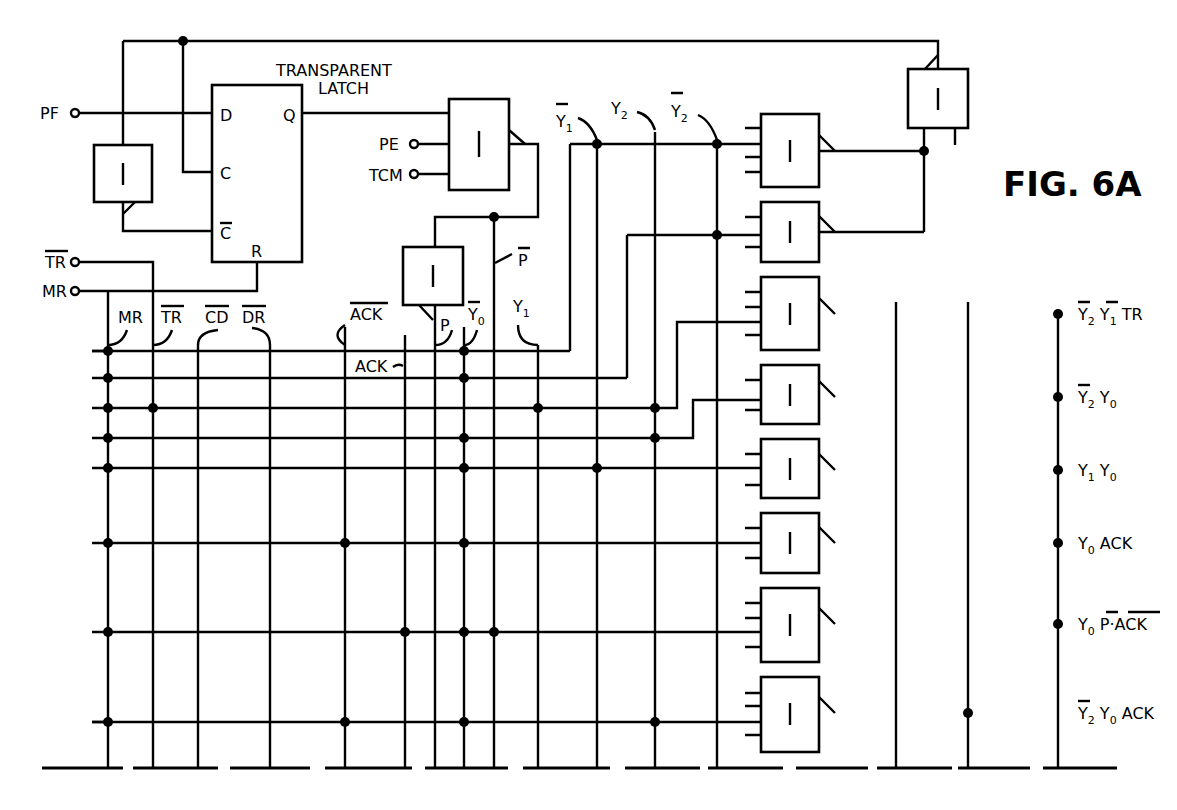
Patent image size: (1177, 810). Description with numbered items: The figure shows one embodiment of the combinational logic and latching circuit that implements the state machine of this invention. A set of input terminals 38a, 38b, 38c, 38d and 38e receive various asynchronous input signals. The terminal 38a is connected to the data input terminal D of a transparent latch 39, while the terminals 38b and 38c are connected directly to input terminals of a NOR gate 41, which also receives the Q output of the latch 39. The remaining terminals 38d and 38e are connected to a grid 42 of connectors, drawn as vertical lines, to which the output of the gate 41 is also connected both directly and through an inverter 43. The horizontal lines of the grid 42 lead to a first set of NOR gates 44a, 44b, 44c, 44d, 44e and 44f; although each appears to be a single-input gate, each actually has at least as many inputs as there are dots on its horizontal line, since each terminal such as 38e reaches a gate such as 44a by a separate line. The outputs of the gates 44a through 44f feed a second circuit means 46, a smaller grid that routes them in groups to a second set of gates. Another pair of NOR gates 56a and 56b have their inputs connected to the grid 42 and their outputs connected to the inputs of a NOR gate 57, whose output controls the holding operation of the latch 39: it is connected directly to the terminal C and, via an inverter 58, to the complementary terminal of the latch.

The input terminal 38a is at (80, 108).
The input terminal 38b is at (410, 139).
The input terminal 38c is at (417, 181).
The input terminal 38d is at (98, 238).
The input terminal 38e is at (79, 295).
The transparent latch 39 is at (300, 238).
The NOR gate 41 is at (500, 108).
The grid of connectors 42 is at (305, 338).
The inverter 43 is at (415, 252).
The NOR gate 44a is at (808, 301).
The NOR gate 44b is at (808, 383).
The NOR gate 44c is at (808, 458).
The NOR gate 44d is at (808, 530).
The NOR gate 44e is at (808, 605).
The NOR gate 44f is at (808, 696).
The second circuit means 46 is at (984, 302).
The NOR gate 56a is at (785, 118).
The NOR gate 56b is at (810, 212).
The NOR gate 57 is at (958, 91).
The inverter 58 is at (95, 177).